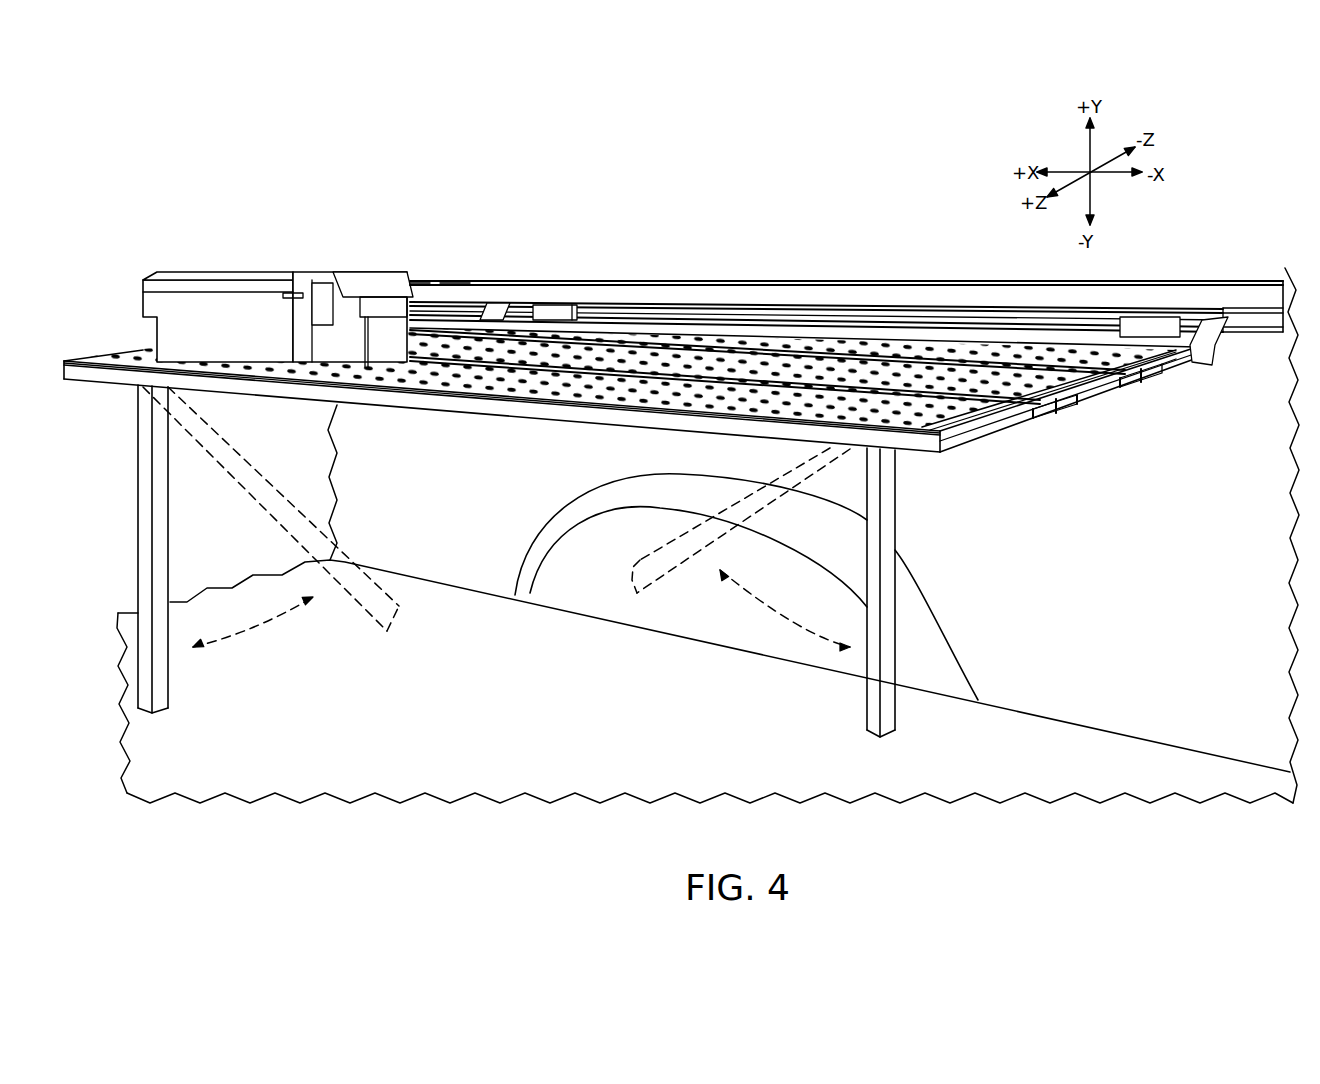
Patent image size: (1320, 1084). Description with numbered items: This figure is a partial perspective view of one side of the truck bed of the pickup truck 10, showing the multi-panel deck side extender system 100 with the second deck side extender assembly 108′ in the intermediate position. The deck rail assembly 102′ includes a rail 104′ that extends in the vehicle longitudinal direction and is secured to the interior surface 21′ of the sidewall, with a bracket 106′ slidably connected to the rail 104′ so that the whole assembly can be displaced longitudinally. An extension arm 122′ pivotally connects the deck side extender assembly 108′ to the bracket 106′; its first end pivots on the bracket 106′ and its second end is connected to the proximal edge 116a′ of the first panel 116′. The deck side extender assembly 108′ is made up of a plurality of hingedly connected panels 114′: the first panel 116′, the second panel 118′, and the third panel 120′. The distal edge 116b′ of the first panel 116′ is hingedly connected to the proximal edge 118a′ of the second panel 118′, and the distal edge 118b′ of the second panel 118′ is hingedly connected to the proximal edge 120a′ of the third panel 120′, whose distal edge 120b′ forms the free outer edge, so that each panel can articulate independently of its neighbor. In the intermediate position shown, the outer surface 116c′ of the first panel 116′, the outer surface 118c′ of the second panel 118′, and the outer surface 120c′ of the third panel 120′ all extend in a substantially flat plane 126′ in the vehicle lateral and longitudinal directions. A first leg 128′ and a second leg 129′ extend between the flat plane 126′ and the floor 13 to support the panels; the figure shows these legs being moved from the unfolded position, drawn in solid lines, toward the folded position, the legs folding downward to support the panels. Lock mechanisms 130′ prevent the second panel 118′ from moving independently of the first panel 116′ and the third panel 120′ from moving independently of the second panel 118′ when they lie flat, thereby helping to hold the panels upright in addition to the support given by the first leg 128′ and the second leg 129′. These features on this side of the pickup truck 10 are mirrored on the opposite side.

The pickup truck 10 is at (386, 191).
The multi-panel deck side extender system 100 is at (439, 201).
The deck rail assembly 102′ is at (816, 249).
The rail 104′ is at (860, 273).
The bracket 106′ is at (548, 307).
The second deck side extender assembly 108′ is at (630, 426).
The plurality of hingedly connected panels 114′ is at (816, 240).
The first panel 116′ is at (1180, 388).
The proximal edge of the first panel 116a′ is at (1183, 372).
The distal edge of the first panel 116b′ is at (1138, 378).
The outer surface of the first panel 116c′ is at (808, 348).
The second panel 118′ is at (1103, 395).
The proximal edge of the second panel 118a′ is at (1138, 390).
The distal edge of the second panel 118b′ is at (1053, 405).
The outer surface of the second panel 118c′ is at (780, 375).
The third panel 120′ is at (982, 450).
The proximal edge of the third panel 120a′ is at (1055, 406).
The distal edge of the third panel 120b′ is at (920, 450).
The outer surface of the third panel 120c′ is at (735, 398).
The extension arm 122′ is at (518, 307).
The substantially flat plane 126′ is at (288, 282).
The first leg 128′ is at (168, 690).
The second leg 129′ is at (868, 716).
The lock mechanism 130′ is at (1163, 380).
The floor 13 is at (467, 719).
The interior surface 21′ is at (1134, 580).